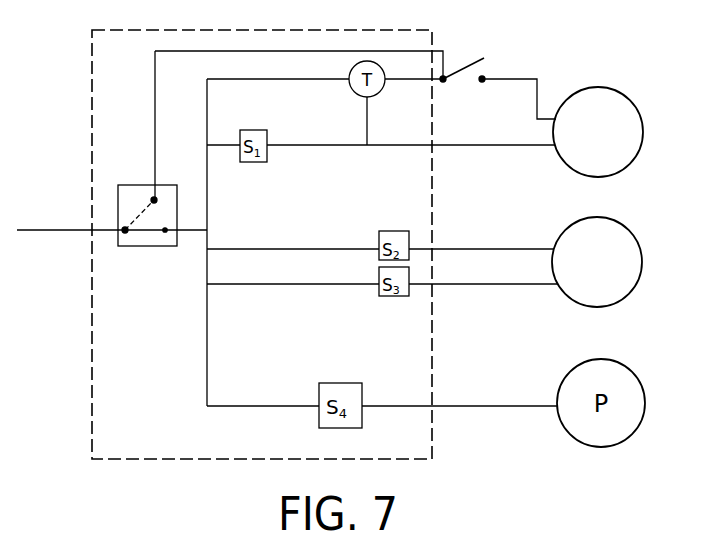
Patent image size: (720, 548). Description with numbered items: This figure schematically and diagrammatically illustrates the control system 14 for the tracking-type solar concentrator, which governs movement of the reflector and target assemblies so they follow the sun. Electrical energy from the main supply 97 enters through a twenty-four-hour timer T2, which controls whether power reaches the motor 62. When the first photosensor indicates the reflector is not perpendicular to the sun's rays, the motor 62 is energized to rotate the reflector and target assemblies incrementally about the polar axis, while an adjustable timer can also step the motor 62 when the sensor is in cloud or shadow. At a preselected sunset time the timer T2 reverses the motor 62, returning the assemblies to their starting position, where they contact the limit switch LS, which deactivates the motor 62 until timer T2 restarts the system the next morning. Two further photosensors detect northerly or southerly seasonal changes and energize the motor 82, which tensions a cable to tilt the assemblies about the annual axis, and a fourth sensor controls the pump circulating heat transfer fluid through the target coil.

The control system 14 is at (76, 64).
The main supply 97 is at (61, 229).
The motor 62 is at (624, 141).
The motor 82 is at (629, 260).
The 24-hour timer T2 is at (124, 184).
The limit switch LS is at (499, 77).